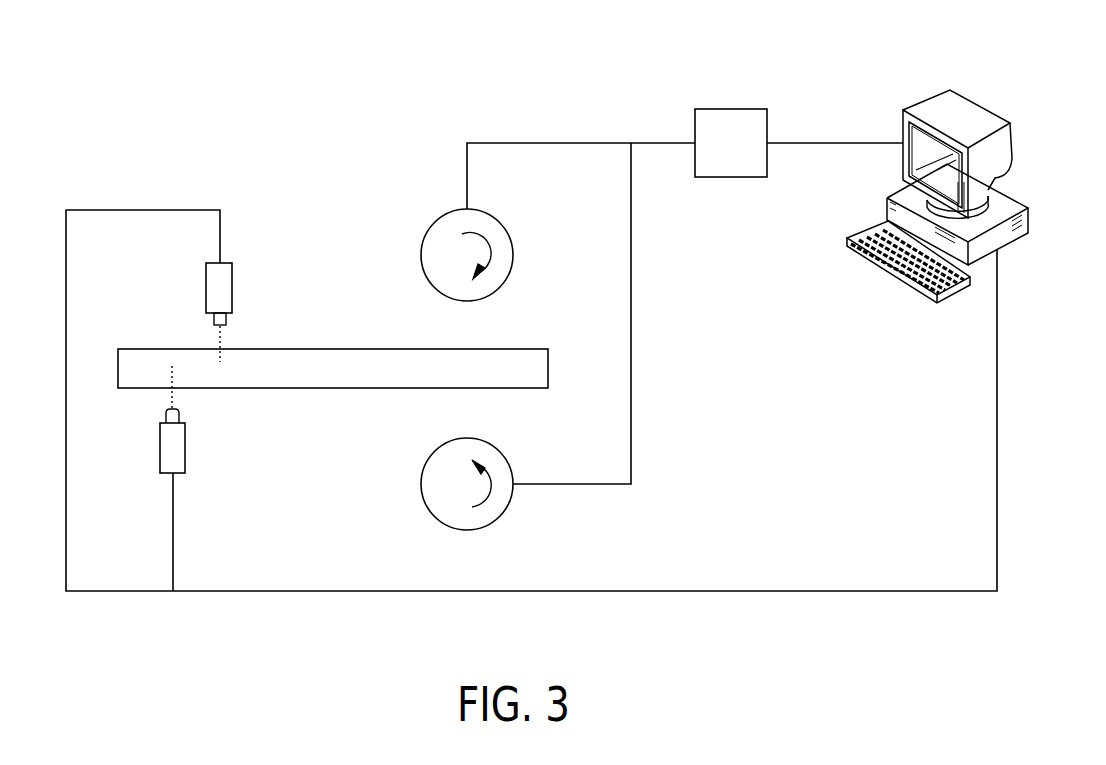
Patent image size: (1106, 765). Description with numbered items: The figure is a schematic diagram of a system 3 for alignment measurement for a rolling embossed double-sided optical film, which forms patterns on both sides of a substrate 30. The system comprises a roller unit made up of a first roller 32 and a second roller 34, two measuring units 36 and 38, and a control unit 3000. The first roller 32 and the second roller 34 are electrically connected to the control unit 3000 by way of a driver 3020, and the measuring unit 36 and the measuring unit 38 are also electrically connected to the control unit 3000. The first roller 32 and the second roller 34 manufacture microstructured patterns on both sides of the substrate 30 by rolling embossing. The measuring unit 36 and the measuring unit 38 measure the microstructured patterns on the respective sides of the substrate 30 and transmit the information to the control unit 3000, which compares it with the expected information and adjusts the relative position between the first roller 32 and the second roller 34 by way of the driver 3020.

The system 3 is at (228, 127).
The substrate 30 is at (516, 350).
The first roller 32 is at (513, 257).
The second roller 34 is at (505, 453).
The measuring unit 36 is at (232, 288).
The measuring unit 38 is at (185, 445).
The control unit 3000 is at (980, 103).
The driver 3020 is at (731, 109).